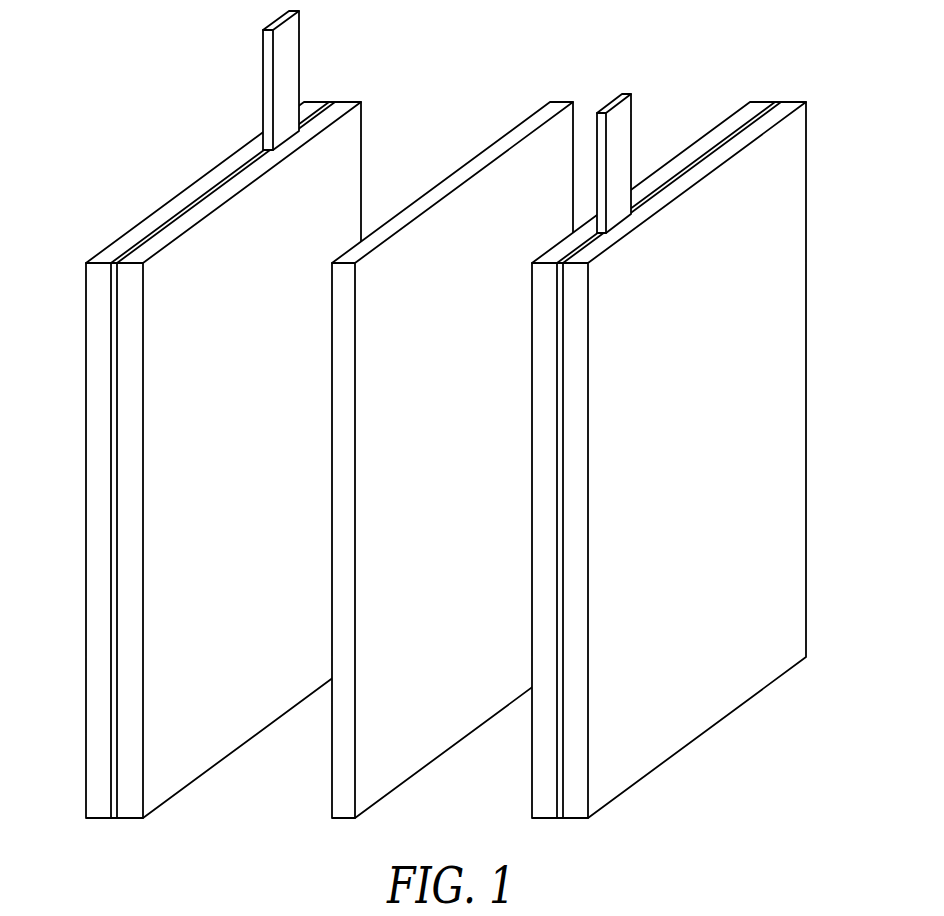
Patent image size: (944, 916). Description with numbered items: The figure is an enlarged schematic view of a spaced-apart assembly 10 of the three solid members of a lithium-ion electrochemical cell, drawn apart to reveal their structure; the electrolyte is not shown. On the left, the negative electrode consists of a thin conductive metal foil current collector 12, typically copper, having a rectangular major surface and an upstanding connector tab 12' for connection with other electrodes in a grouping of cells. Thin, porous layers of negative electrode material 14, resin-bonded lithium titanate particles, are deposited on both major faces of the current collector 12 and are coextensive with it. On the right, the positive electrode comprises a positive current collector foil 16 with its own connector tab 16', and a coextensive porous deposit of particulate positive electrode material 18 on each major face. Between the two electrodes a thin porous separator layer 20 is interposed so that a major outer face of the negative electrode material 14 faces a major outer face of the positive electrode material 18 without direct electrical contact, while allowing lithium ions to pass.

The spaced-apart assembly 10 is at (140, 70).
The negative electrode current collector 12 is at (184, 460).
The connector tab 12' is at (242, 80).
The negative electrode material 14 is at (148, 217).
The positive current collector foil 16 is at (620, 460).
The connector tab 16' is at (652, 163).
The positive electrode material 18 is at (730, 115).
The separator layer 20 is at (510, 129).